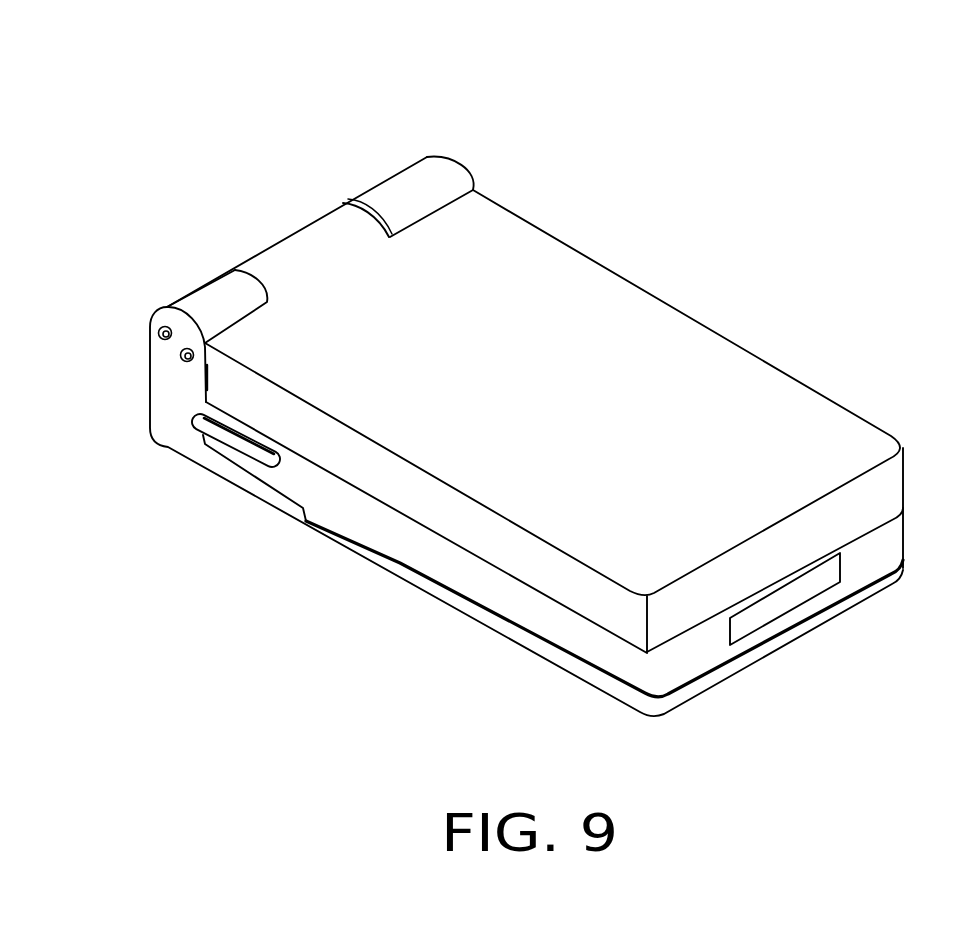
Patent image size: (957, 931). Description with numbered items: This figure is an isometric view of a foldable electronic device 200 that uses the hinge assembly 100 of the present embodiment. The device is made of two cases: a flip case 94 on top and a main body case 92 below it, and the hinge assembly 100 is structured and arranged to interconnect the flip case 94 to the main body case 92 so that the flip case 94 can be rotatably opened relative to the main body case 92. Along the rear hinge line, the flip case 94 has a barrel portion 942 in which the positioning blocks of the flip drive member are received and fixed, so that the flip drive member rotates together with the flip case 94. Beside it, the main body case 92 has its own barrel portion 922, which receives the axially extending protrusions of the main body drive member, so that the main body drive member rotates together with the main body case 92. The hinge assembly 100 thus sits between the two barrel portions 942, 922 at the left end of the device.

The foldable electronic device 200 is at (465, 380).
The flip case 94 is at (733, 393).
The barrel portion 942 is at (300, 257).
The main body case 92 is at (533, 613).
The barrel portion 922 is at (217, 303).
The hinge assembly 100 is at (158, 334).